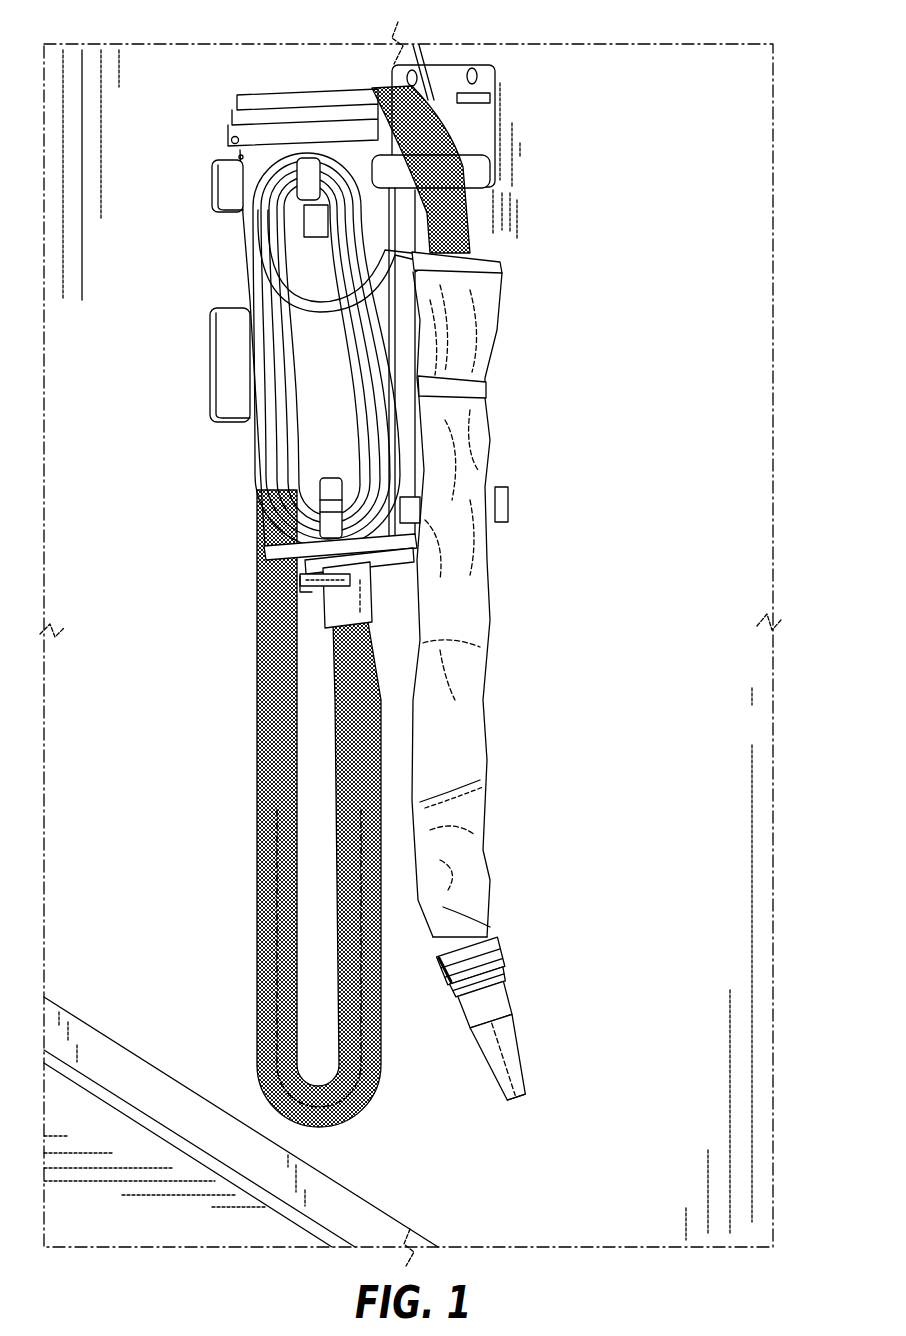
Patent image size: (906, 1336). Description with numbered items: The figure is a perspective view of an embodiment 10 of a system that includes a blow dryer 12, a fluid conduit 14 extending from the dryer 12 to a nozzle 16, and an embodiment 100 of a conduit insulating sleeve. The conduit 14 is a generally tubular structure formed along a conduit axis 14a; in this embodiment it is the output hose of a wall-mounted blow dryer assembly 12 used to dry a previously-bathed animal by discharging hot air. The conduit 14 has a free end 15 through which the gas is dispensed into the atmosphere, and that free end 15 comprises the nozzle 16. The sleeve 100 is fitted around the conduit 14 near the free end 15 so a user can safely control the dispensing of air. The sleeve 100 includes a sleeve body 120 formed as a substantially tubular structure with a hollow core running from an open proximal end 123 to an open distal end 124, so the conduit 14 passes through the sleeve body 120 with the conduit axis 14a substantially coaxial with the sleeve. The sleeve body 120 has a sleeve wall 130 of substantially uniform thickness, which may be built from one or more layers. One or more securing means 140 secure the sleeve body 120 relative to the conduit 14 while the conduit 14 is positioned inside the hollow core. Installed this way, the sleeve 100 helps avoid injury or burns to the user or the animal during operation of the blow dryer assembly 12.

The system embodiment 10 is at (411, 581).
The blow dryer 12 is at (250, 84).
The fluid conduit 14 is at (366, 606).
The conduit axis 14a is at (272, 842).
The free end 15 is at (517, 1108).
The nozzle 16 is at (521, 1071).
The conduit insulating sleeve 100 is at (506, 691).
The sleeve body 120 is at (455, 605).
The open proximal end 123 is at (487, 257).
The open distal end 124 is at (497, 1000).
The sleeve wall 130 is at (440, 792).
The securing means 140 is at (477, 387).